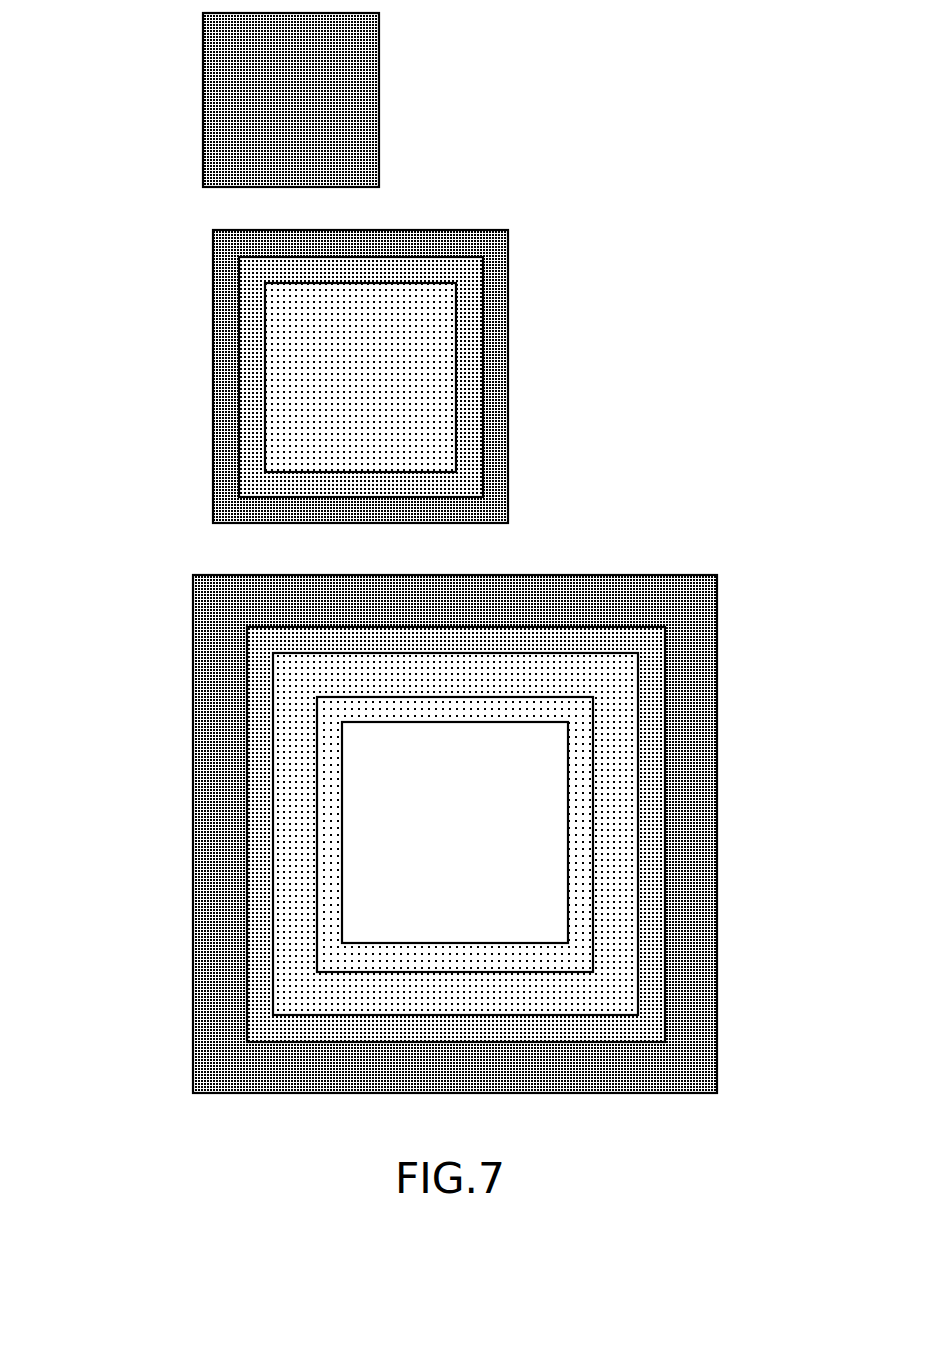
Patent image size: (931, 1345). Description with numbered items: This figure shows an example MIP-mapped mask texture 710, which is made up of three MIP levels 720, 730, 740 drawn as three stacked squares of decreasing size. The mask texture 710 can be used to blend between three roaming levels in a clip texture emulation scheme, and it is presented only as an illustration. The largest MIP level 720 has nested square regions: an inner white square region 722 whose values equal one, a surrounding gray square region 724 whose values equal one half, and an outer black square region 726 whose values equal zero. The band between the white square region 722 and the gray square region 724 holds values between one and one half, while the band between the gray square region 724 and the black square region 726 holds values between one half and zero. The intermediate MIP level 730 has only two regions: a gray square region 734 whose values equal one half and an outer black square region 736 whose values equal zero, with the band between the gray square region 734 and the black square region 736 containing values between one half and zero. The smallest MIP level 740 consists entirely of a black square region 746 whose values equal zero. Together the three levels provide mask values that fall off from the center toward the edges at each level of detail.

The MIP-mapped mask texture 710 is at (693, 147).
The MIP level 720 is at (427, 834).
The white square region 722 is at (568, 912).
The gray square region 724 is at (638, 795).
The black square region 726 is at (717, 680).
The MIP level 730 is at (330, 376).
The gray square region 734 is at (457, 408).
The black square region 736 is at (509, 270).
The MIP level 740 is at (258, 100).
The black square region 746 is at (380, 77).